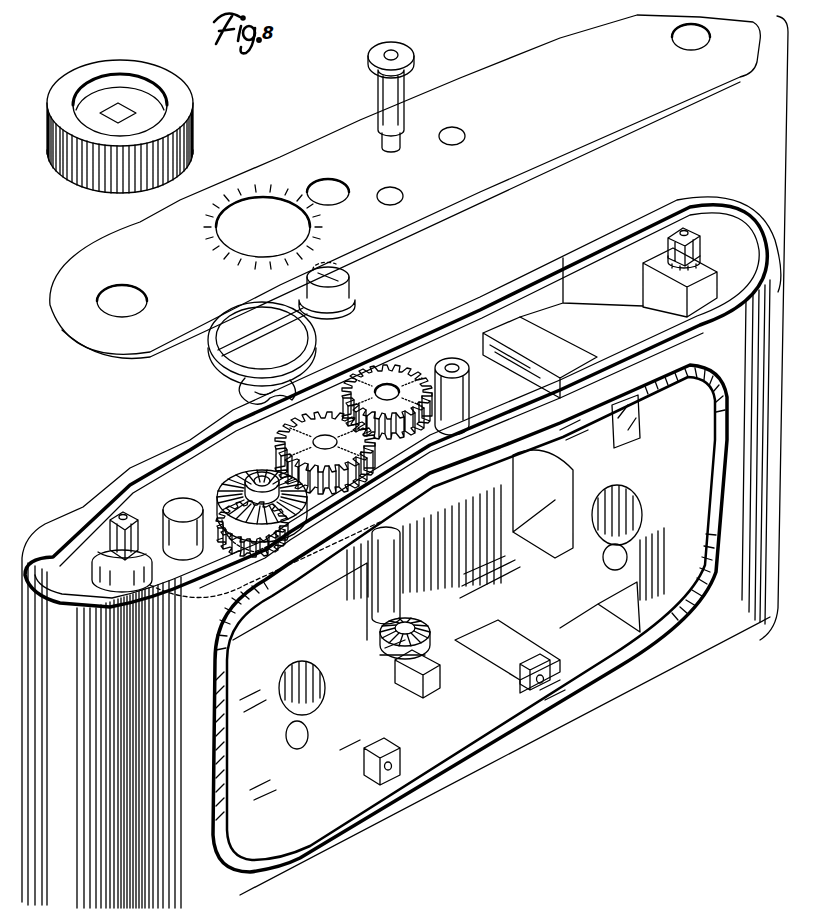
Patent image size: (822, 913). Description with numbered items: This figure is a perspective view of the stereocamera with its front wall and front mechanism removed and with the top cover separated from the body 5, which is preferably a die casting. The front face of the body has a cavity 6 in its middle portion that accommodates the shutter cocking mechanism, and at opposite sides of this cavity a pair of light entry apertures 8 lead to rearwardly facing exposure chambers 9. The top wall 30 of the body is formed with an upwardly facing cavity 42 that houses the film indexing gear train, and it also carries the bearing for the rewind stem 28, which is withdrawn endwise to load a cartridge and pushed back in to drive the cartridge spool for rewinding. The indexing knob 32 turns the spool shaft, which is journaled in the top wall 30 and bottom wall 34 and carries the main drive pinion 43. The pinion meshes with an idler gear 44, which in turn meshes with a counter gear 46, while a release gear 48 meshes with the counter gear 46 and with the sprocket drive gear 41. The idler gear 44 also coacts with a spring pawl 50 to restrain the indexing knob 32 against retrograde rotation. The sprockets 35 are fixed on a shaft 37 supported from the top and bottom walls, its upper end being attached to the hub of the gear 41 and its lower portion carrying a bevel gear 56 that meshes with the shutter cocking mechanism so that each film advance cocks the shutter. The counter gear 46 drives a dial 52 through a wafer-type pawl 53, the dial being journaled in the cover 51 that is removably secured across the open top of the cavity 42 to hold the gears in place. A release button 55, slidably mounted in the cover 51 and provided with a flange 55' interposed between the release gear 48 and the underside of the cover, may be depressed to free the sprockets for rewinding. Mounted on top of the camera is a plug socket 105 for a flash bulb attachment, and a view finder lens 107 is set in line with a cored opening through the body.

The body 5 is at (622, 720).
The cavity 6 is at (480, 728).
The light entry apertures 8 is at (288, 685).
The exposure chambers 9 is at (284, 730).
The rewind stem 28 is at (98, 518).
The top wall 30 is at (622, 333).
The knob 32 is at (180, 100).
The bottom wall 34 is at (452, 725).
The sprockets 35 is at (412, 685).
The shaft 37 is at (368, 615).
The gear 41 is at (372, 366).
The cavity 42 is at (553, 283).
The main drive pinion 43 is at (90, 552).
The idler gear 44 is at (150, 512).
The counter gear 46 is at (232, 484).
The release gear 48 is at (272, 447).
The spring pawl 50 is at (228, 598).
The cover 51 is at (545, 115).
The dial 52 is at (218, 340).
The wafer-type pawl 53 is at (240, 388).
The release button 55 is at (350, 277).
The flange 55' is at (348, 299).
The bevel gear 56 is at (432, 645).
The plug socket 105 is at (410, 54).
The lens 107 is at (624, 440).